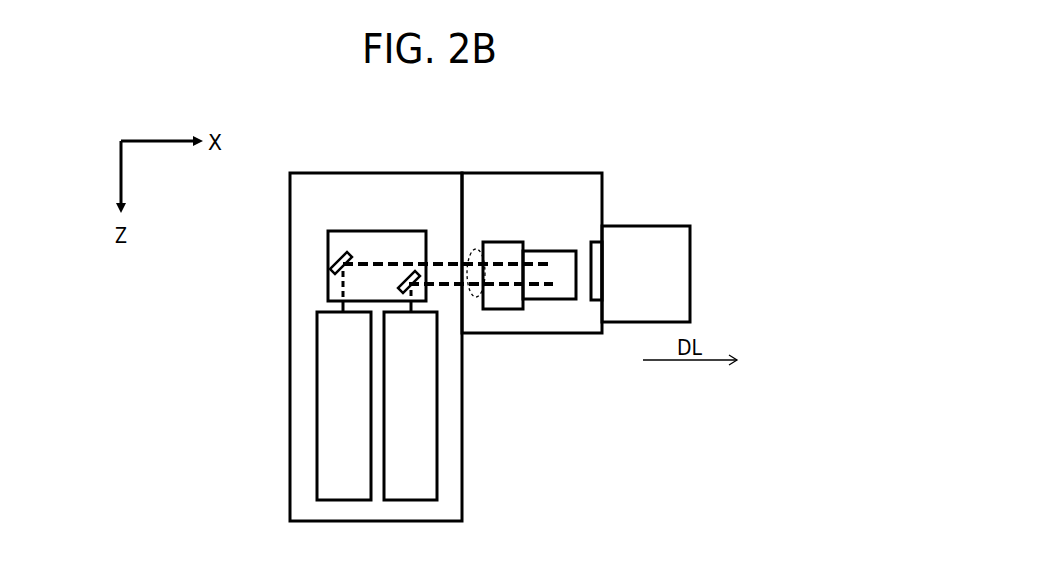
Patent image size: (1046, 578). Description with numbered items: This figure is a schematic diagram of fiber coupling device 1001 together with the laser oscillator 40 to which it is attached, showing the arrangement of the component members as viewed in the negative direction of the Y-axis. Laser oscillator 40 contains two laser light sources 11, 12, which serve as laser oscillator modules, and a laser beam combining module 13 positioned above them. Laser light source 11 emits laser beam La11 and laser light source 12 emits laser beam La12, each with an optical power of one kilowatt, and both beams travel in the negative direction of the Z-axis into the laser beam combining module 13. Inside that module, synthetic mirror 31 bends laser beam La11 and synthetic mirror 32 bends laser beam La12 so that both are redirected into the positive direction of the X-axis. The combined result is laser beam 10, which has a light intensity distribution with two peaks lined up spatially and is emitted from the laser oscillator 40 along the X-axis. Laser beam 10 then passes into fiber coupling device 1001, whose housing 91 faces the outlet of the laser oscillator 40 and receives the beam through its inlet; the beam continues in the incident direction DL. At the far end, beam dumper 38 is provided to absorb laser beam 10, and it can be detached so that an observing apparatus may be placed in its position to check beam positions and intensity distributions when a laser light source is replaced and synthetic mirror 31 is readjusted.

The laser oscillator 40 is at (305, 505).
The laser beam combining module 13 is at (330, 232).
The laser light source 12 is at (340, 472).
The laser light source 11 is at (421, 472).
The synthetic mirror 31 is at (408, 276).
The synthetic mirror 32 is at (332, 271).
The laser beam La11 is at (405, 293).
The laser beam La12 is at (340, 288).
The combined laser beam 10 is at (471, 296).
The housing 91 is at (577, 333).
The beam dumper 38 is at (677, 282).
The fiber coupling device 1001 is at (635, 251).